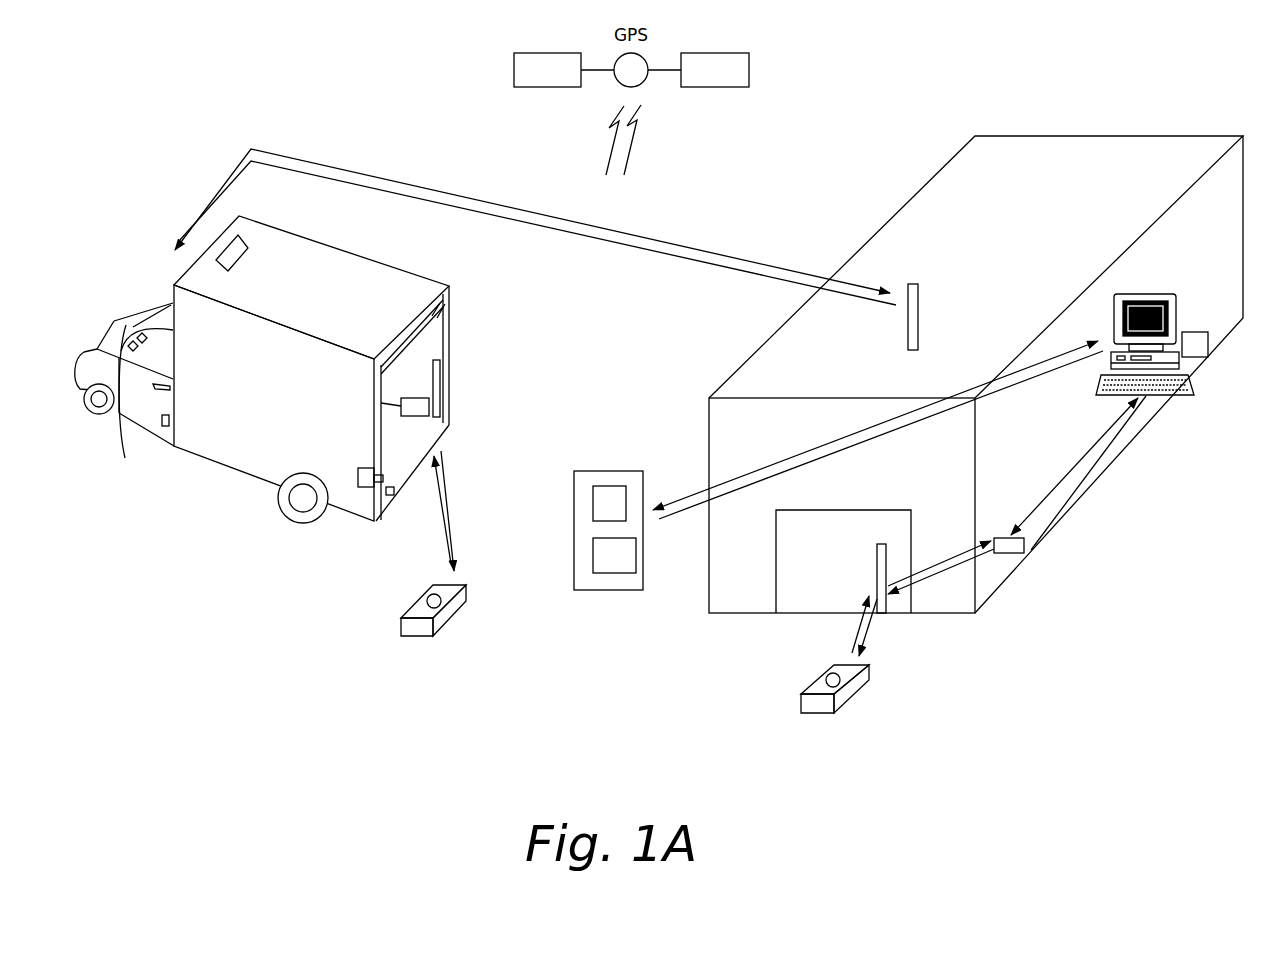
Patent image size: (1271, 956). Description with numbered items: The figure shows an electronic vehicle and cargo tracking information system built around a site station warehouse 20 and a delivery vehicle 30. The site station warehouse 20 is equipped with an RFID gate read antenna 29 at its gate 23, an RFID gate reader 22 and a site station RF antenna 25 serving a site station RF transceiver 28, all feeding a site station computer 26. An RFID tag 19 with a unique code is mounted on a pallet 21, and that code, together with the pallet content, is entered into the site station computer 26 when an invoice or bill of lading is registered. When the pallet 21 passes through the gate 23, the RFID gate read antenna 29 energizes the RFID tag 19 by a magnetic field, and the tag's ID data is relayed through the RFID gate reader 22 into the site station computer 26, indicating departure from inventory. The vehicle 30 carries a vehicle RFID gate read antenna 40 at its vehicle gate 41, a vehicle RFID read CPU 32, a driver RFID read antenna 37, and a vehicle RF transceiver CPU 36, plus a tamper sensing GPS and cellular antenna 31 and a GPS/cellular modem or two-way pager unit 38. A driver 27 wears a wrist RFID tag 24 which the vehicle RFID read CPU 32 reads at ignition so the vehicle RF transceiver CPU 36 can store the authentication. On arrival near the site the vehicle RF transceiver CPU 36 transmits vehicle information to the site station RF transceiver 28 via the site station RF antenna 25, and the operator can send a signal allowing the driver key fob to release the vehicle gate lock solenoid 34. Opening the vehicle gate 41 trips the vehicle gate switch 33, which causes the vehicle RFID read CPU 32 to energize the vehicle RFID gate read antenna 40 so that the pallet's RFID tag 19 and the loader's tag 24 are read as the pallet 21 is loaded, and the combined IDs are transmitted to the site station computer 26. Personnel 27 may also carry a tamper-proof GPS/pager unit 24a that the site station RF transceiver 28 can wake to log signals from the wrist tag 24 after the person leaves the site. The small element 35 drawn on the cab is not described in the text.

The RFID tag 19 is at (440, 598).
The site station warehouse 20 is at (1041, 131).
The pallet 21 is at (648, 650).
The RFID gate reader 22 is at (1008, 550).
The gate 23 is at (775, 573).
The driver RFID tag 24 is at (609, 503).
The GPS/modem, two-way pager or satellite unit 24a is at (614, 555).
The site station RF antenna 25 is at (928, 317).
The site station computer 26 is at (1165, 391).
The driver 27 is at (608, 569).
The site station RF transceiver 28 is at (1207, 350).
The RFID gate read antenna 29 is at (879, 565).
The vehicle 30 is at (233, 467).
The tamper sensing GPS and cellular antenna 31 is at (239, 255).
The vehicle RFID read CPU 32 is at (417, 413).
The vehicle gate switch 33 is at (393, 490).
The vehicle gate lock solenoid 34 is at (362, 484).
The cab sensor 35 is at (173, 435).
The vehicle RF transceiver CPU 36 is at (138, 333).
The driver RFID read antenna 37 is at (165, 387).
The tamper sensing GPS/cellular modem or two-way pager unit 38 is at (121, 405).
The vehicle RFID gate read antenna 40 is at (439, 385).
The vehicle gate 41 is at (441, 299).